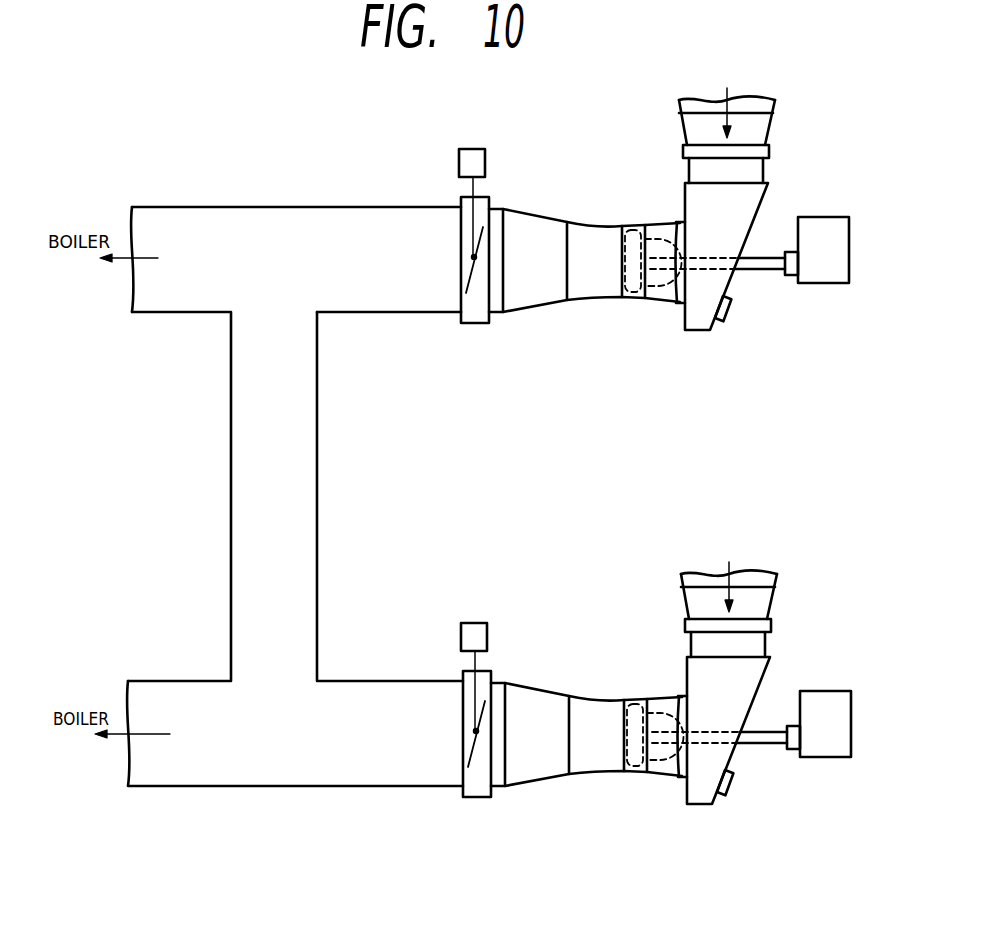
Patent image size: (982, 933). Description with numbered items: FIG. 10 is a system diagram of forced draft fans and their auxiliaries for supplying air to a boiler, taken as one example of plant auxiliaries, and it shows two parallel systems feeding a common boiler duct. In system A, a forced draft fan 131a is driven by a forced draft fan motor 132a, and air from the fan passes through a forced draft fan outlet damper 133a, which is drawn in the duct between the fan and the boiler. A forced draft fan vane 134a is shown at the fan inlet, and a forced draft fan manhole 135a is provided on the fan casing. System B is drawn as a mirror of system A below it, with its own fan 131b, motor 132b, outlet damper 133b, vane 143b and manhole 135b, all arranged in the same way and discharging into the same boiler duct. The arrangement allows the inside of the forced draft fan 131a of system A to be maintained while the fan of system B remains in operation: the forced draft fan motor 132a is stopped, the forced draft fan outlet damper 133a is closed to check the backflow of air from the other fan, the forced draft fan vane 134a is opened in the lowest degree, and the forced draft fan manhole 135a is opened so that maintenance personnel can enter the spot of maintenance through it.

The forced draft fan 131a is at (662, 300).
The forced draft fan motor 132a is at (828, 217).
The forced draft fan outlet damper 133a is at (476, 323).
The forced draft fan vane 134a is at (633, 226).
The forced draft fan manhole 135a is at (733, 302).
The ejector nozzle assembly 131b is at (641, 698).
The motor 132b is at (751, 698).
The motor-operated valve 133b is at (488, 736).
The damper 143b is at (628, 701).
The sensor tab 135b is at (772, 785).